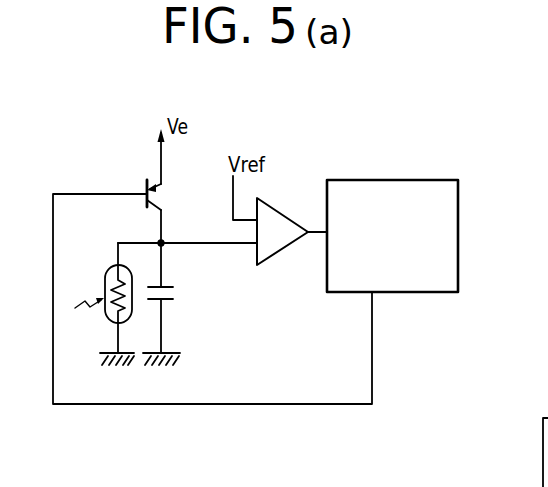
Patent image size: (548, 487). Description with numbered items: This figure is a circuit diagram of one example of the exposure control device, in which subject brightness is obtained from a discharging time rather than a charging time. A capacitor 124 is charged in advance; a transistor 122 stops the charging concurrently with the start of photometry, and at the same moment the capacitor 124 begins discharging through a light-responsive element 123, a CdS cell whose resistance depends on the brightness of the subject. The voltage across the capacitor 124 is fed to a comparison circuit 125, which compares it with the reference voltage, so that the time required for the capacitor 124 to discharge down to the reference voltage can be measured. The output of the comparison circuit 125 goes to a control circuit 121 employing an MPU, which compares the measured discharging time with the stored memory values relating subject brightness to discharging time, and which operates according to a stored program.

The control circuit 121 is at (390, 180).
The transistor 122 is at (147, 190).
The light-responsive element 123 is at (104, 266).
The capacitor 124 is at (173, 293).
The comparison circuit 125 is at (280, 252).